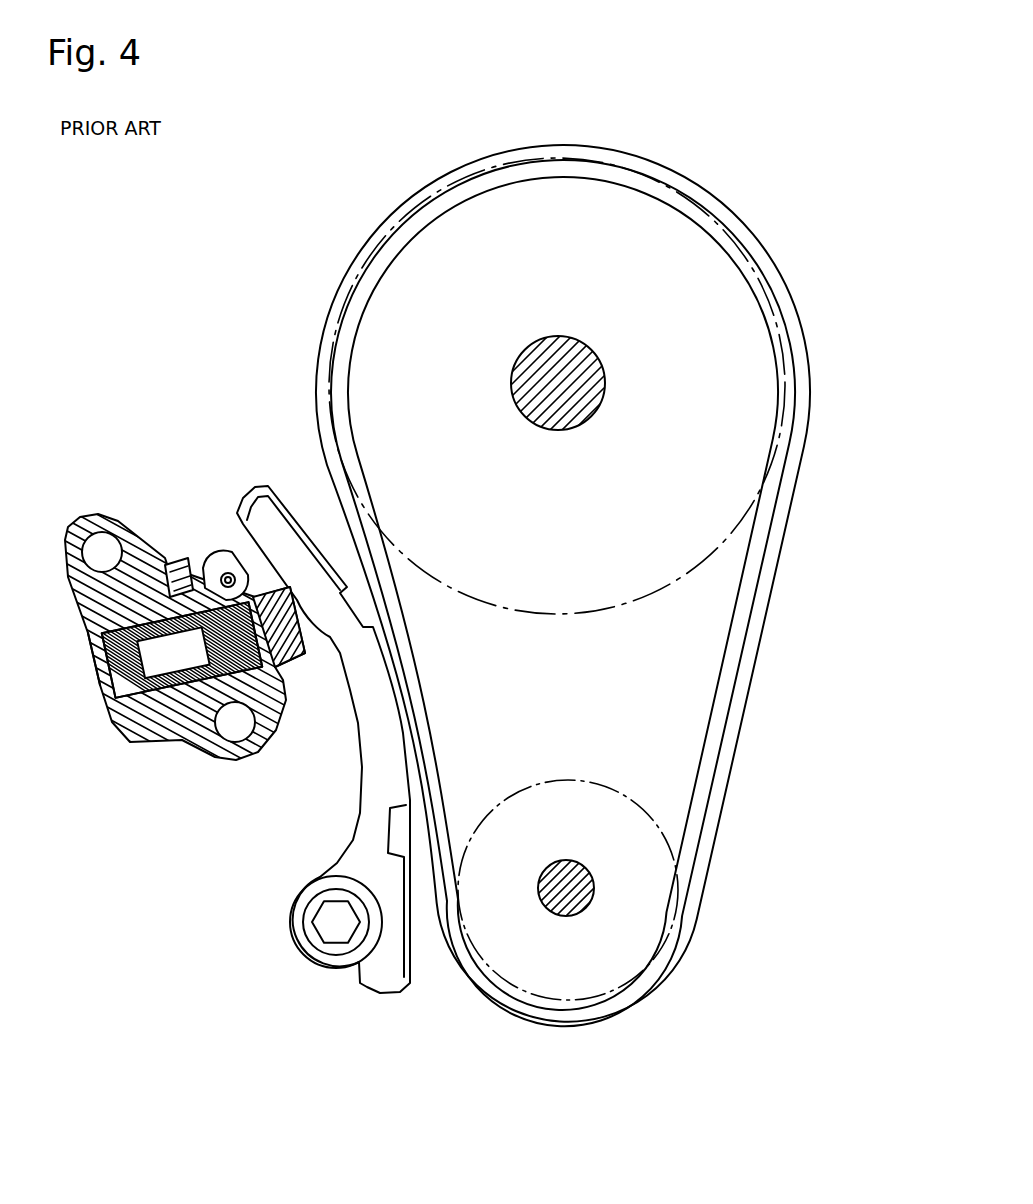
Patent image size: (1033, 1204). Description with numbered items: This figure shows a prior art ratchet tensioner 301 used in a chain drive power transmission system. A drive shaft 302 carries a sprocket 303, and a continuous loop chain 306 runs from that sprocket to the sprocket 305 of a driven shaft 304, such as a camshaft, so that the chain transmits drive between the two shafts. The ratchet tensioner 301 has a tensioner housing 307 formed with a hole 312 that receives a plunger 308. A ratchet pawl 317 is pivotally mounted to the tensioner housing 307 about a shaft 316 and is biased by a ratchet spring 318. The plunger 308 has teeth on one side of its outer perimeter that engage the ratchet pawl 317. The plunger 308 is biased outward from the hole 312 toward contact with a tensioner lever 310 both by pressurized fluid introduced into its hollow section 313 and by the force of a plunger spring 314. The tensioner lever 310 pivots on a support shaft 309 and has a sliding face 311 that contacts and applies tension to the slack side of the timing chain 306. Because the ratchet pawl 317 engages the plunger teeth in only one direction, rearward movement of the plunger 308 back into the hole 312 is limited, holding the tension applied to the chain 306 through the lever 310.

The ratchet tensioner 301 is at (191, 633).
The drive shaft 302 is at (590, 906).
The sprocket 303 is at (652, 893).
The driven shaft 304 is at (603, 366).
The sprocket 305 is at (742, 364).
The continuous loop chain 306 is at (790, 444).
The tensioner housing 307 is at (152, 730).
The plunger 308 is at (284, 636).
The support shaft 309 is at (327, 928).
The tensioner lever 310 is at (395, 735).
The sliding face 311 is at (407, 678).
The hole 312 is at (107, 700).
The hollow section 313 is at (174, 660).
The plunger spring 314 is at (93, 635).
The shaft 316 is at (228, 572).
The ratchet pawl 317 is at (205, 555).
The ratchet spring 318 is at (168, 560).